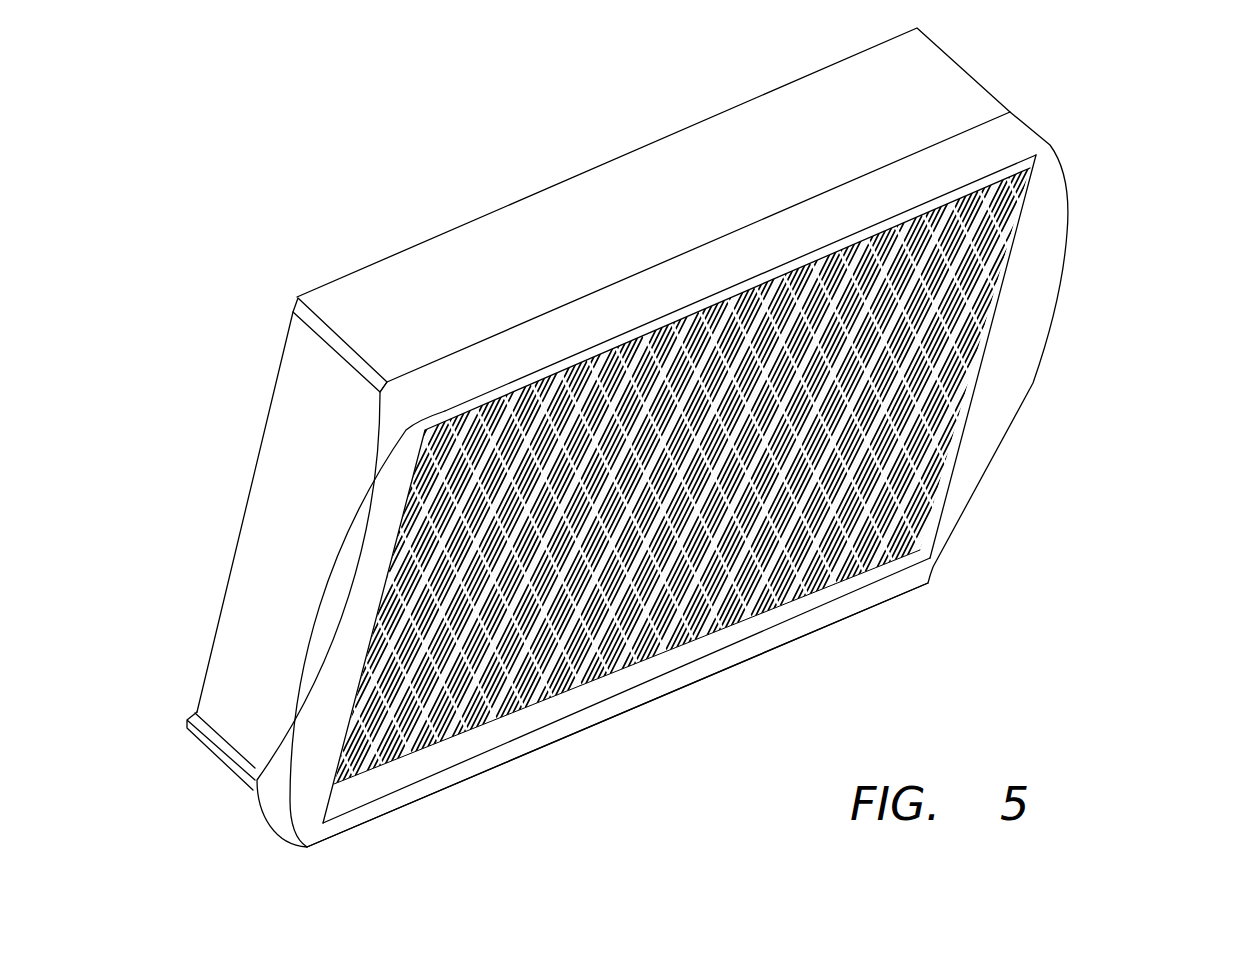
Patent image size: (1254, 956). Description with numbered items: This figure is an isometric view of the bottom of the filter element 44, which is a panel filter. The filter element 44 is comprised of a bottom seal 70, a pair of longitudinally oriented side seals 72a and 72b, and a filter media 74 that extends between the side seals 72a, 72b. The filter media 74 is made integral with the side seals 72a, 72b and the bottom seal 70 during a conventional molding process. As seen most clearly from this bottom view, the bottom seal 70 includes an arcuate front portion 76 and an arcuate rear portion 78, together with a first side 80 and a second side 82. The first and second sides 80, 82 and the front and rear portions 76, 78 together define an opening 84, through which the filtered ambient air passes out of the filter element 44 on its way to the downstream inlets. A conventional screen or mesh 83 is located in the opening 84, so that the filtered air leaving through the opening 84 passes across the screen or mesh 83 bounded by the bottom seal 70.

The filter element 44 is at (694, 437).
The bottom seal 70 is at (330, 517).
The side seal 72a is at (470, 243).
The side seal 72b is at (222, 758).
The filter media 74 is at (240, 650).
The front portion 76 is at (340, 613).
The rear portion 78 is at (1018, 372).
The first side 80 is at (768, 274).
The second side 82 is at (777, 635).
The screen or mesh 83 is at (637, 643).
The opening 84 is at (848, 583).